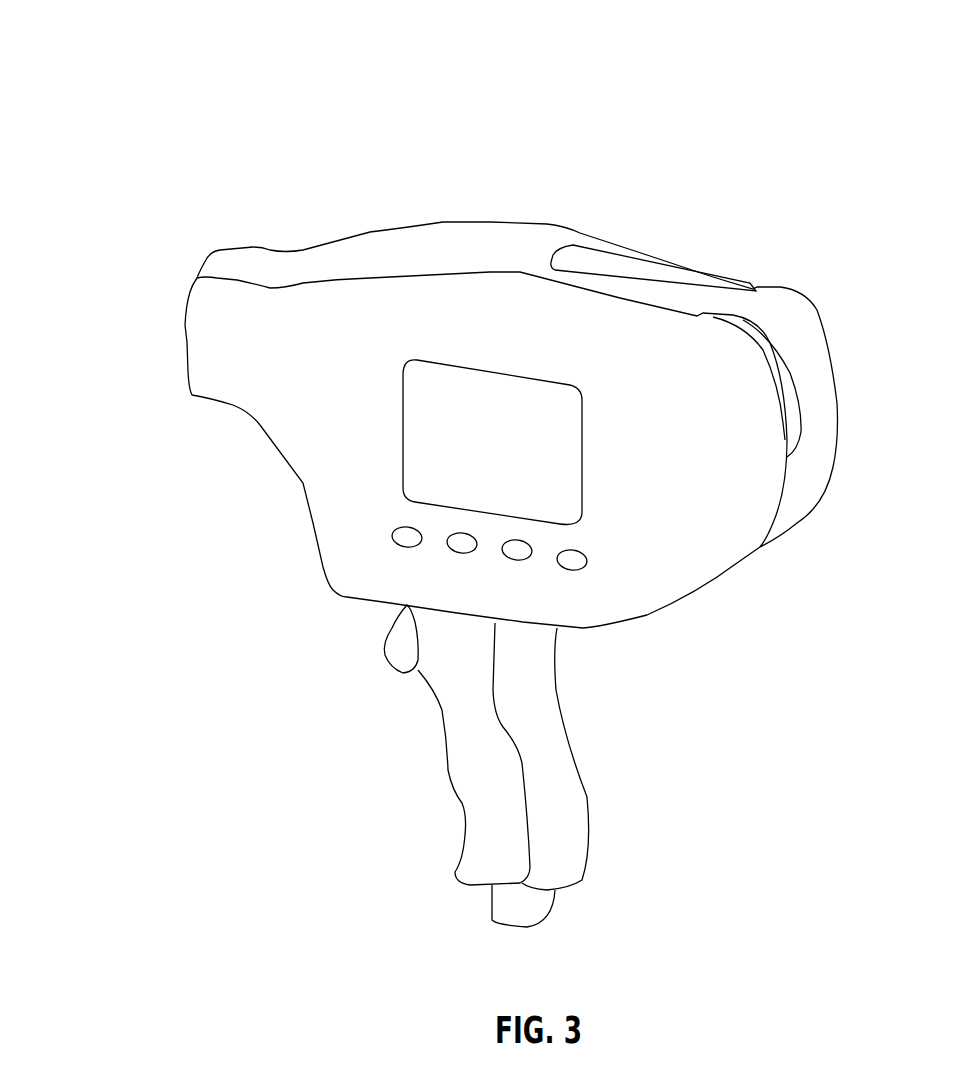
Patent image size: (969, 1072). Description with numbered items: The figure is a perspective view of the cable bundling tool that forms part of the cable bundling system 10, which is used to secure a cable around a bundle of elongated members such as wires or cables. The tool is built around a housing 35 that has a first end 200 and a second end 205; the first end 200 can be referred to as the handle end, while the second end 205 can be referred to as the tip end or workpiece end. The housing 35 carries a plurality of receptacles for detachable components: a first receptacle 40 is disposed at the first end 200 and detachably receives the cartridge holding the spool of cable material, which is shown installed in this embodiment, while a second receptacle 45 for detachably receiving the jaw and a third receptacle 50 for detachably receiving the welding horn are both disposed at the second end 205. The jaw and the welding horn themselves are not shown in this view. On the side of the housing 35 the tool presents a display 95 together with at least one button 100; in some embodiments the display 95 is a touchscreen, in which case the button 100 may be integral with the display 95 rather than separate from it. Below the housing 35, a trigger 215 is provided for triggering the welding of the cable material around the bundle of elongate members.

The cable bundling system 10 is at (131, 71).
The housing 35 is at (322, 388).
The first receptacle 40 is at (800, 300).
The second receptacle 45 is at (185, 338).
The third receptacle 50 is at (190, 378).
The display 95 is at (400, 440).
The button 100 is at (572, 560).
The first end 200 is at (760, 550).
The second end 205 is at (207, 268).
The trigger 215 is at (383, 647).